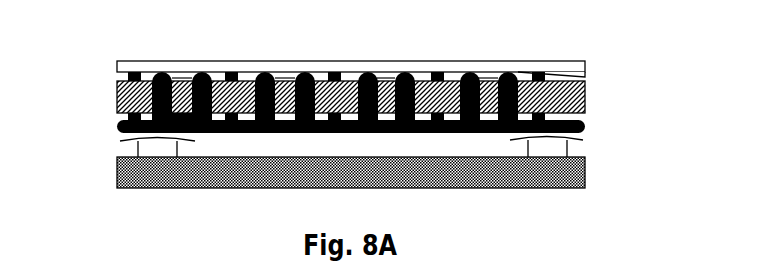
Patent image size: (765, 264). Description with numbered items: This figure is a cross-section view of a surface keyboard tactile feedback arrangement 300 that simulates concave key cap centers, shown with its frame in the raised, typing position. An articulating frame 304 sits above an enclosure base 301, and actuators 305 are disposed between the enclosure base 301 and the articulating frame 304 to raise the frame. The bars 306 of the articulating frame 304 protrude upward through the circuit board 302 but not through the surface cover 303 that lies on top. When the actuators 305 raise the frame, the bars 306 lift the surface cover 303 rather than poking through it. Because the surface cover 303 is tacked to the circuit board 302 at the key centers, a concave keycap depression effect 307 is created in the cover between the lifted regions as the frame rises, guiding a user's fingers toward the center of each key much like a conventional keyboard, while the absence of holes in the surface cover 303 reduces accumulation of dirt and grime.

The display device assembly 300 is at (363, 42).
The enclosure base 301 is at (586, 165).
The circuit board 302 is at (586, 94).
The surface cover 303 is at (223, 61).
The articulating frame 304 is at (117, 122).
The actuators 305 is at (123, 142).
The bars 306 is at (473, 72).
The concave keycap depression effect 307 is at (182, 78).